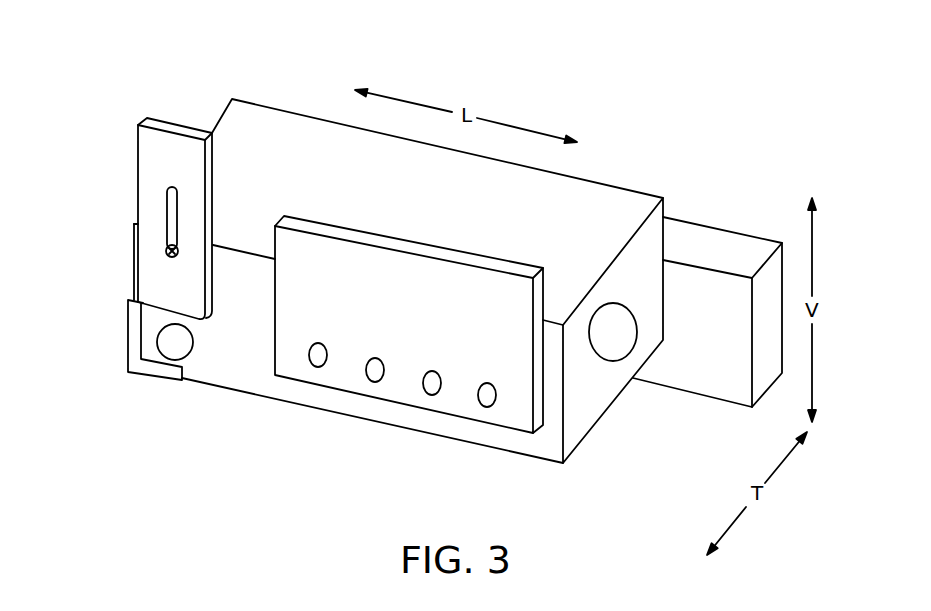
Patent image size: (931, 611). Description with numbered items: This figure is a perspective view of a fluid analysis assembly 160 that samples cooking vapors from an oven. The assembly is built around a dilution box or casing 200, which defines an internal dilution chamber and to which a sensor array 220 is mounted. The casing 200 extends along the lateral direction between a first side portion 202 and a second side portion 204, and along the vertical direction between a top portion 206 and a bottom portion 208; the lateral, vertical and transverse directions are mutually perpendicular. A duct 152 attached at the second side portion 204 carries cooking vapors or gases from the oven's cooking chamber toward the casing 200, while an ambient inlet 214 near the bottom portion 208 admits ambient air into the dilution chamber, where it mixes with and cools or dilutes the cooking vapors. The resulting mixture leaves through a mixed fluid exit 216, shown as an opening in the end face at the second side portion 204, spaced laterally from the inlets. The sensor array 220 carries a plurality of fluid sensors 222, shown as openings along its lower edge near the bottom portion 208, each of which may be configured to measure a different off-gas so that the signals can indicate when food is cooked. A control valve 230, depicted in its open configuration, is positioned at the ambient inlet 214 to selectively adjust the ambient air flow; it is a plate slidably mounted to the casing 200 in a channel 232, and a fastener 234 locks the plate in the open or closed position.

The duct 152 is at (705, 236).
The fluid analysis assembly 160 is at (71, 59).
The casing 200 is at (231, 99).
The first side portion 202 is at (258, 90).
The second side portion 204 is at (652, 186).
The top portion 206 is at (124, 228).
The bottom portion 208 is at (116, 367).
The ambient inlet 214 is at (197, 371).
The mixed fluid exit 216 is at (601, 376).
The sensor array 220 is at (386, 250).
The fluid sensors 222 is at (319, 358).
The control valve 230 is at (150, 149).
The channel 232 is at (133, 313).
The fastener 234 is at (165, 250).